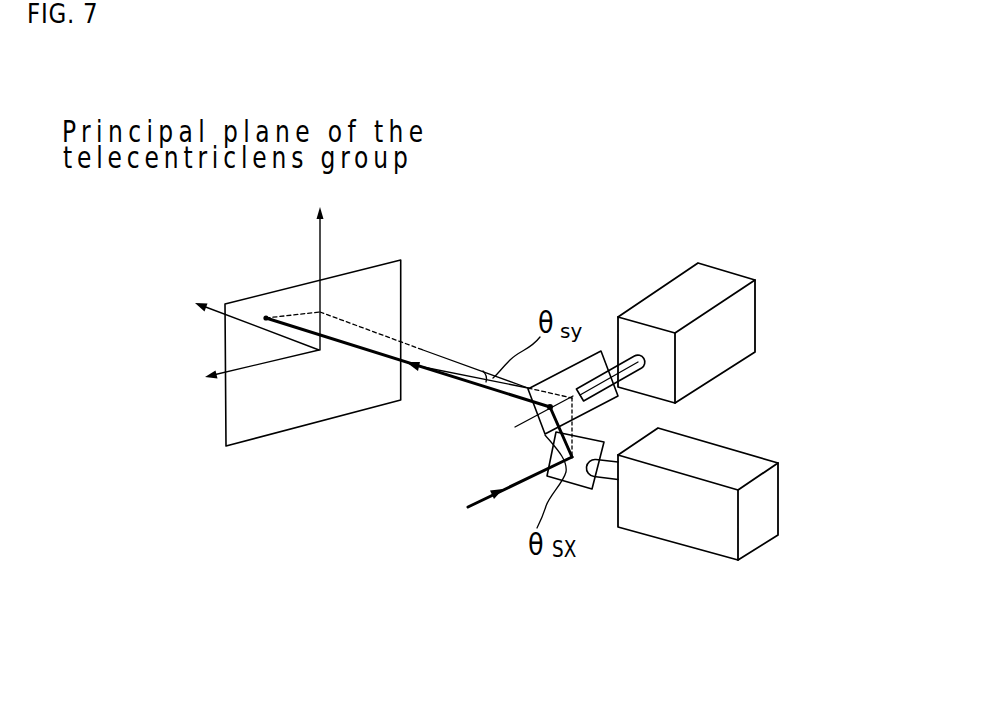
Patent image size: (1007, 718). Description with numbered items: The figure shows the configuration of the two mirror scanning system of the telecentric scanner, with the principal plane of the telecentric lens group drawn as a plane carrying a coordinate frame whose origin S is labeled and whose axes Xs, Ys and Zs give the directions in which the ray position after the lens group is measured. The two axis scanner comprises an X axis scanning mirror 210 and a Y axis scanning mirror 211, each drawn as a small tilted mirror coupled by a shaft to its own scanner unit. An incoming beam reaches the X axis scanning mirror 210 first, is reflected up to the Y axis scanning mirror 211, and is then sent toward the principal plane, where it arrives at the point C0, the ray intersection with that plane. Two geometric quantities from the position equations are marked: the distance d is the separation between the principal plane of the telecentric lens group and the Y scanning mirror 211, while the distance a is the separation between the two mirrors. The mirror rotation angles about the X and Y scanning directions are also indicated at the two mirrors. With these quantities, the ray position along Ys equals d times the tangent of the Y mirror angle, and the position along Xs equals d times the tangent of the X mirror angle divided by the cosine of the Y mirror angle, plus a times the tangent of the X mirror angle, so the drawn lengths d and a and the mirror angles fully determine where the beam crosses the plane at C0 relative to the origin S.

The Y axis scanning mirror 211 is at (755, 317).
The X axis scanning mirror 210 is at (778, 475).
The principal plane origin S is at (313, 353).
The beam center point on principal plane C0 is at (281, 339).
The distance between principal plane and Y scanning mirror d is at (424, 350).
The distance between the two mirrors a is at (573, 402).
The Y axis of principal plane Ys is at (336, 268).
The X axis of principal plane Xs is at (237, 372).
The Z axis of principal plane Zs is at (237, 314).